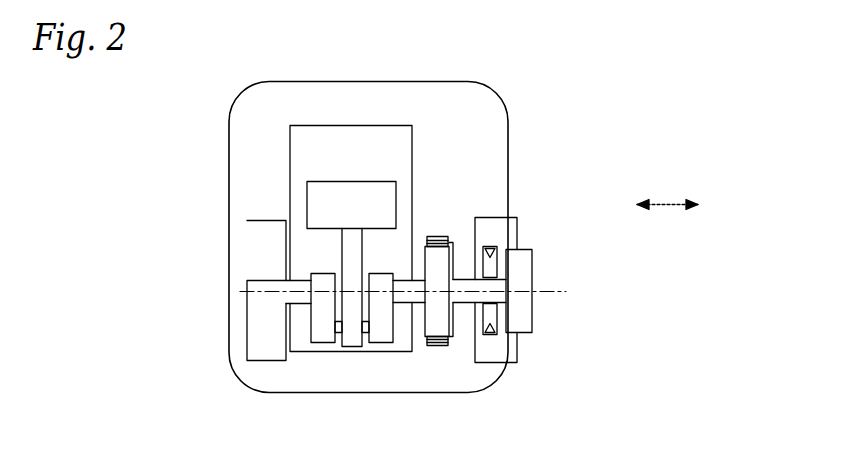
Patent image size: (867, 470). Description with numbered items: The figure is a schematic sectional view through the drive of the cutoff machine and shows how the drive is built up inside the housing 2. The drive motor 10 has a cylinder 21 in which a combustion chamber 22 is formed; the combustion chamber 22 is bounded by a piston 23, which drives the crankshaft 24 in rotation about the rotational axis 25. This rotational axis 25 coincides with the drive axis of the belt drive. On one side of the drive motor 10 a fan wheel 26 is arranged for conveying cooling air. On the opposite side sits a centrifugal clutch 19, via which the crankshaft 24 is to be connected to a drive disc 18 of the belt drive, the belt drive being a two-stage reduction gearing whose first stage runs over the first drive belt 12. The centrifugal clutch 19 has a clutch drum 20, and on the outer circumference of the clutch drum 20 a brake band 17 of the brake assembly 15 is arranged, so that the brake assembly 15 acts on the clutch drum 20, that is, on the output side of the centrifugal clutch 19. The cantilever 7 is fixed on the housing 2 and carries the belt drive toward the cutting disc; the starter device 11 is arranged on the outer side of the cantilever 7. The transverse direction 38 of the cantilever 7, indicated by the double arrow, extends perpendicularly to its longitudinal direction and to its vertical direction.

The housing 2 is at (508, 130).
The drive motor 10 is at (291, 140).
The combustion chamber 22 is at (373, 150).
The cylinder 21 is at (413, 150).
The piston 23 is at (328, 196).
The rotational axis 25 is at (380, 295).
The fan wheel 26 is at (257, 340).
The crankshaft 24 is at (412, 297).
The brake band 17 is at (438, 237).
The clutch drum 20 is at (453, 247).
The cantilever 7 is at (517, 232).
The starter device 11 is at (526, 262).
The drive disc 18 is at (490, 315).
The first drive belt 12 is at (497, 335).
The centrifugal clutch 19 is at (453, 327).
The brake assembly 15 is at (441, 347).
The transverse direction 38 is at (667, 196).